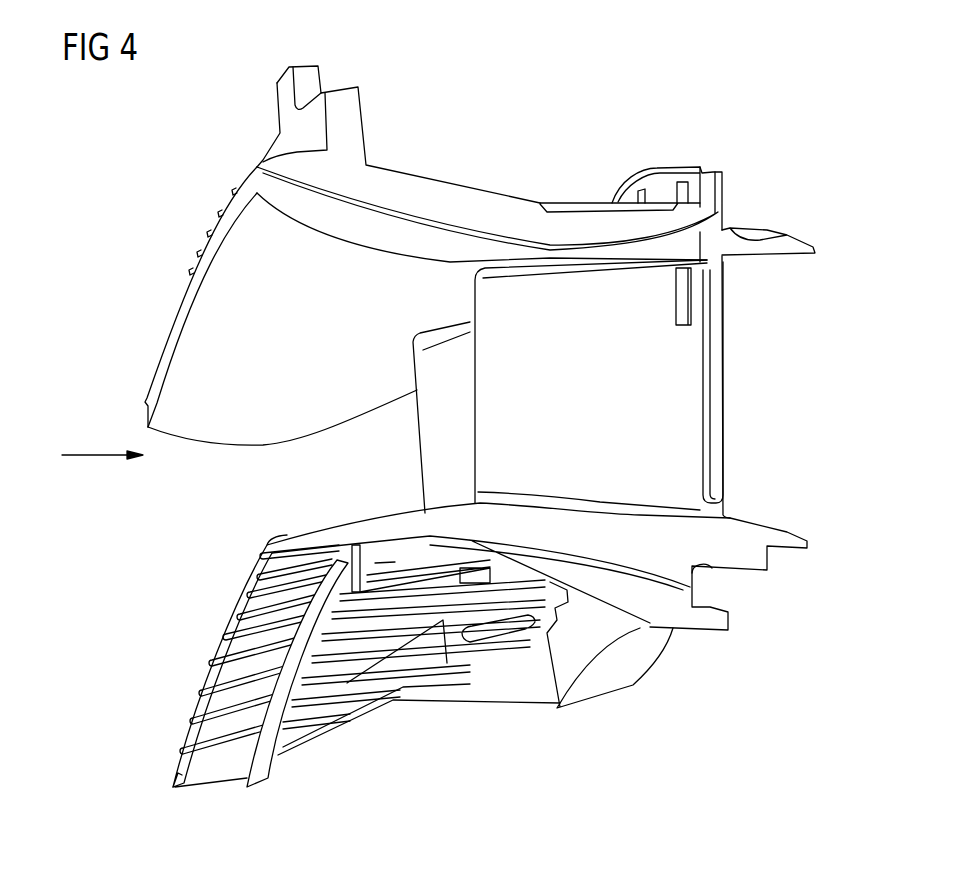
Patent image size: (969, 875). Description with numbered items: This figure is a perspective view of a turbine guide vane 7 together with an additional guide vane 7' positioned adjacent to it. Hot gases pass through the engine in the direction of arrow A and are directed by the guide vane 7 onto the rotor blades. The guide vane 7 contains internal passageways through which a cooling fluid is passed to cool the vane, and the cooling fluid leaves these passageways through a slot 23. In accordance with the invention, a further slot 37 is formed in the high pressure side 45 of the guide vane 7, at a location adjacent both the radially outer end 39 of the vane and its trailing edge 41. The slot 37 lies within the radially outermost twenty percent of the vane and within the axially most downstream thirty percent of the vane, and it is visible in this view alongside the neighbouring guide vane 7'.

The guide vane 7 is at (480, 387).
The additional guide vane 7' is at (366, 619).
The slot 23 is at (716, 448).
The slot 37 is at (682, 298).
The radially outer end 39 is at (602, 260).
The trailing edge 41 is at (728, 394).
The high pressure side 45 is at (568, 414).
The direction of hot gas flow A is at (93, 453).